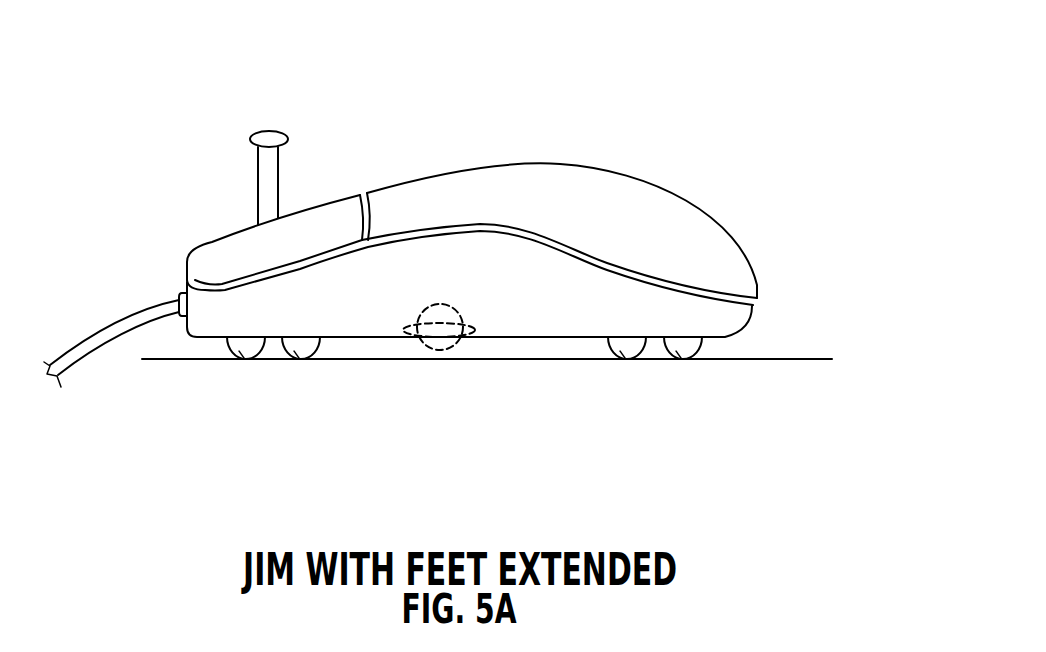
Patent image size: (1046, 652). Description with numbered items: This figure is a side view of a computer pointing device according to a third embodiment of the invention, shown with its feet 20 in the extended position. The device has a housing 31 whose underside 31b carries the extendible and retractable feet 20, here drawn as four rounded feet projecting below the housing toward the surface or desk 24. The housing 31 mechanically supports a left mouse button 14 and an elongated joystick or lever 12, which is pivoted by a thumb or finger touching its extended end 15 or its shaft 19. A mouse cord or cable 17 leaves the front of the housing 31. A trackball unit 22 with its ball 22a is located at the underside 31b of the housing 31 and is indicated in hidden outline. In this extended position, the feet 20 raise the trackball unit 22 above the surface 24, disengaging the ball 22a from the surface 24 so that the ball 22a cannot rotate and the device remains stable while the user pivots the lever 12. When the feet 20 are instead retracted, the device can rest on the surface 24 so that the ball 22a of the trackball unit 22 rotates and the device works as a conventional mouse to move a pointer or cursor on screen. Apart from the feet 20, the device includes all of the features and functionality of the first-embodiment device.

The lever 12 is at (258, 175).
The button 14 is at (313, 218).
The extended end 15 is at (273, 132).
The cable 17 is at (130, 325).
The shaft 19 is at (258, 208).
The feet 20 is at (243, 358).
The trackball unit 22 is at (458, 338).
The ball 22a is at (408, 362).
The surface 24 is at (787, 359).
The housing 31 is at (653, 193).
The underside 31b is at (492, 462).